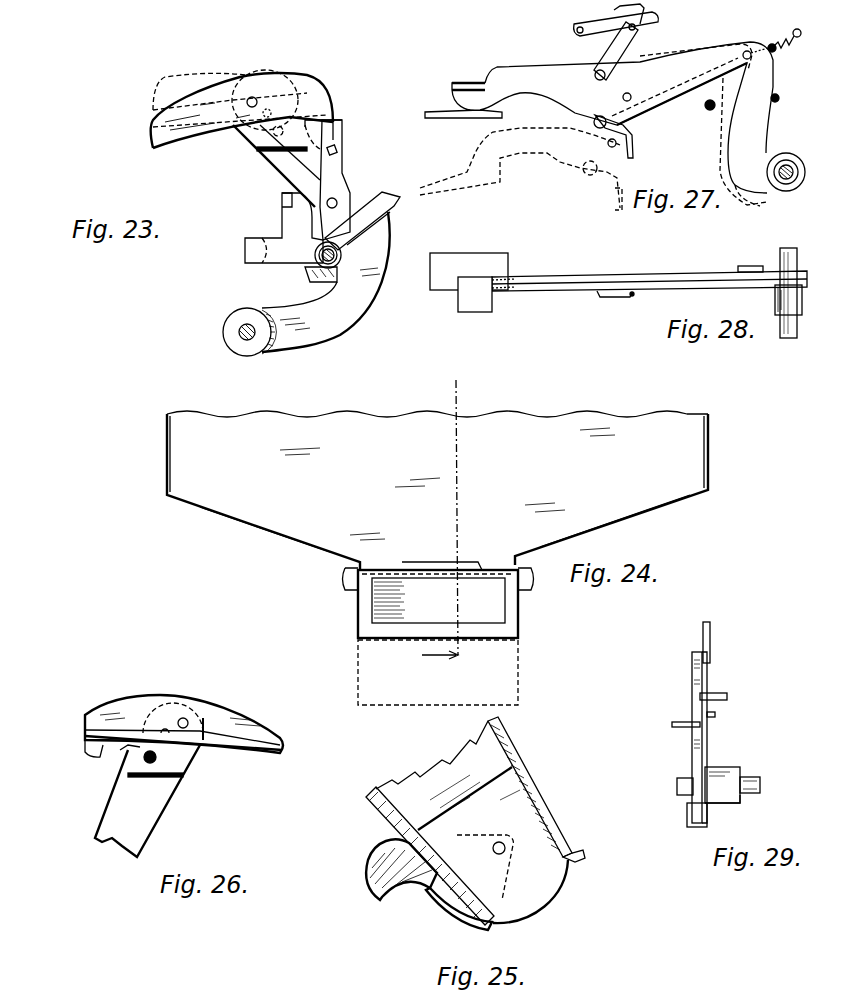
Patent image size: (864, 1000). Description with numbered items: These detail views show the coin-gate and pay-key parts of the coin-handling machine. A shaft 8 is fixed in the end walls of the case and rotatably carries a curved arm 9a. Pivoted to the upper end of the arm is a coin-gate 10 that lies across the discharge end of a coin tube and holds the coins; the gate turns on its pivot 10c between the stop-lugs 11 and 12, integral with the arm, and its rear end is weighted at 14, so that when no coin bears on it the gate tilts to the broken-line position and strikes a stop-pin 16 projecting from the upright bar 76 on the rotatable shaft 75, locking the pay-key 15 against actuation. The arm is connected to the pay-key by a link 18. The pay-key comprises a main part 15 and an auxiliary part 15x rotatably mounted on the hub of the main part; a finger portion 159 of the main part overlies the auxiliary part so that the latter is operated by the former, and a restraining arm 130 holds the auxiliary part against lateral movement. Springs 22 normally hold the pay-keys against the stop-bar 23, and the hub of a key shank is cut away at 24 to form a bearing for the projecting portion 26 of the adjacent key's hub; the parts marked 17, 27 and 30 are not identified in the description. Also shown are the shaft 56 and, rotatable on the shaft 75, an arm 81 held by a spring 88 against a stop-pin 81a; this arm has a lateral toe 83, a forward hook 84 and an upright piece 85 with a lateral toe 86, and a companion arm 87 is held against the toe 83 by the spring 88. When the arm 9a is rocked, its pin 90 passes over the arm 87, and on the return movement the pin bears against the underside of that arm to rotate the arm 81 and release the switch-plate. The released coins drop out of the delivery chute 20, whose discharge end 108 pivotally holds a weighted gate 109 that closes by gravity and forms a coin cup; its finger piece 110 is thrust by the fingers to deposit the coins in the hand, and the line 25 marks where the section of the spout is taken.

In FIG. 23, the shaft 8 is at (233, 332).
In FIG. 23, the arm 9a is at (362, 292).
In FIG. 26, the arm 9a is at (143, 812).
In FIG. 23, the coin-gate 10 is at (155, 90).
In FIG. 26, the coin-gate 10 is at (97, 717).
In FIG. 23, the pivot 10c is at (251, 97).
In FIG. 26, the pivot 10c is at (188, 722).
In FIG. 23, the stop-lug 11 is at (308, 85).
In FIG. 26, the stop-lug 11 is at (150, 732).
In FIG. 23, the stop-lug 12 is at (293, 127).
In FIG. 26, the stop-lug 12 is at (122, 750).
In FIG. 23, the weight 14 is at (308, 112).
In FIG. 26, the weight 14 is at (85, 743).
In FIG. 27, the pay-key 15 is at (492, 70).
In FIG. 28, the pay-key 15 is at (580, 283).
In FIG. 29, the pay-key 15 is at (692, 662).
In FIG. 27, the auxiliary part of pay-key 15x is at (543, 72).
In FIG. 28, the auxiliary part of pay-key 15x is at (525, 287).
In FIG. 29, the auxiliary part of pay-key 15x is at (672, 725).
In FIG. 27, the finger portion 159 is at (475, 83).
In FIG. 28, the finger portion 159 is at (482, 303).
In FIG. 29, the finger portion 159 is at (727, 697).
In FIG. 23, the stop-pin 16 is at (337, 150).
In FIG. 27, the pivot stud 17 is at (794, 165).
In FIG. 28, the pivot stud 17 is at (785, 328).
In FIG. 29, the pivot stud 17 is at (760, 783).
In FIG. 27, the link 18 is at (634, 152).
In FIG. 28, the link 18 is at (613, 296).
In FIG. 24, the delivery chute 20 is at (437, 490).
In FIG. 25, the delivery chute 20 is at (507, 733).
In FIG. 27, the springs 22 is at (780, 45).
In FIG. 27, the stop-bar 23 is at (778, 97).
In FIG. 27, the cut-away portion of hub 24 is at (793, 185).
In FIG. 28, the cut-away portion of hub 24 is at (807, 305).
In FIG. 29, the cut-away portion of hub 24 is at (737, 800).
In FIG. 24, the section line 25 is at (444, 524).
In FIG. 27, the projecting portion of hub 26 is at (786, 166).
In FIG. 27, the link 27 is at (647, 18).
In FIG. 27, the lever 30 is at (623, 50).
In FIG. 29, the lever 30 is at (710, 635).
In FIG. 27, the shaft 56 is at (708, 110).
In FIG. 23, the rotatable shaft 75 is at (343, 250).
In FIG. 23, the upright bar 76 is at (337, 135).
In FIG. 23, the arm 81 is at (307, 262).
In FIG. 23, the stop-pin 81a is at (308, 247).
In FIG. 23, the lateral toe 83 is at (392, 203).
In FIG. 23, the hook 84 is at (245, 250).
In FIG. 23, the upright piece 85 is at (288, 223).
In FIG. 23, the lateral toe 86 is at (282, 205).
In FIG. 23, the companion arm 87 is at (387, 217).
In FIG. 23, the spring 88 is at (345, 262).
In FIG. 23, the pin 90 is at (276, 134).
In FIG. 27, the pin 90 is at (623, 98).
In FIG. 28, the pin 90 is at (632, 296).
In FIG. 26, the pin 90 is at (147, 757).
In FIG. 29, the pin 90 is at (717, 713).
In FIG. 24, the discharge end 108 is at (438, 600).
In FIG. 25, the discharge end 108 is at (506, 838).
In FIG. 24, the weighted gate 109 is at (518, 627).
In FIG. 25, the weighted gate 109 is at (442, 910).
In FIG. 25, the finger piece 110 is at (393, 893).
In FIG. 27, the restraining arm 130 is at (743, 198).
In FIG. 28, the restraining arm 130 is at (755, 266).
In FIG. 29, the restraining arm 130 is at (690, 803).